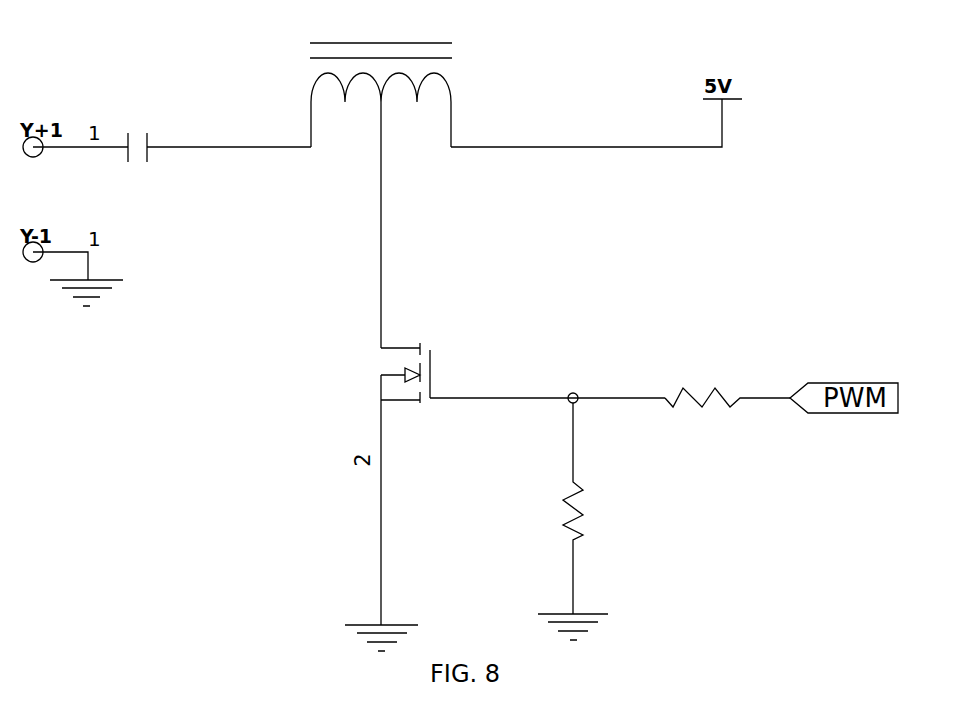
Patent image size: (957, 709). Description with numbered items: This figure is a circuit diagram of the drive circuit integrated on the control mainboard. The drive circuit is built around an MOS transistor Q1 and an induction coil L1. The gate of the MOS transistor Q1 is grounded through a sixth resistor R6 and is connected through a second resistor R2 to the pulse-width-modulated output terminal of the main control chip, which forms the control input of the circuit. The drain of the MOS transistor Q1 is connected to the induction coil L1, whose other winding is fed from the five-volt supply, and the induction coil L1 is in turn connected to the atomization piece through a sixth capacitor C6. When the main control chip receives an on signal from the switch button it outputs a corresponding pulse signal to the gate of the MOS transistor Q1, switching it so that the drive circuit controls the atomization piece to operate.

The sixth capacitor C6 is at (128, 137).
The induction coil L1 is at (371, 195).
The MOS transistor Q1 is at (448, 474).
The second resistor R2 is at (723, 406).
The sixth resistor R6 is at (593, 508).